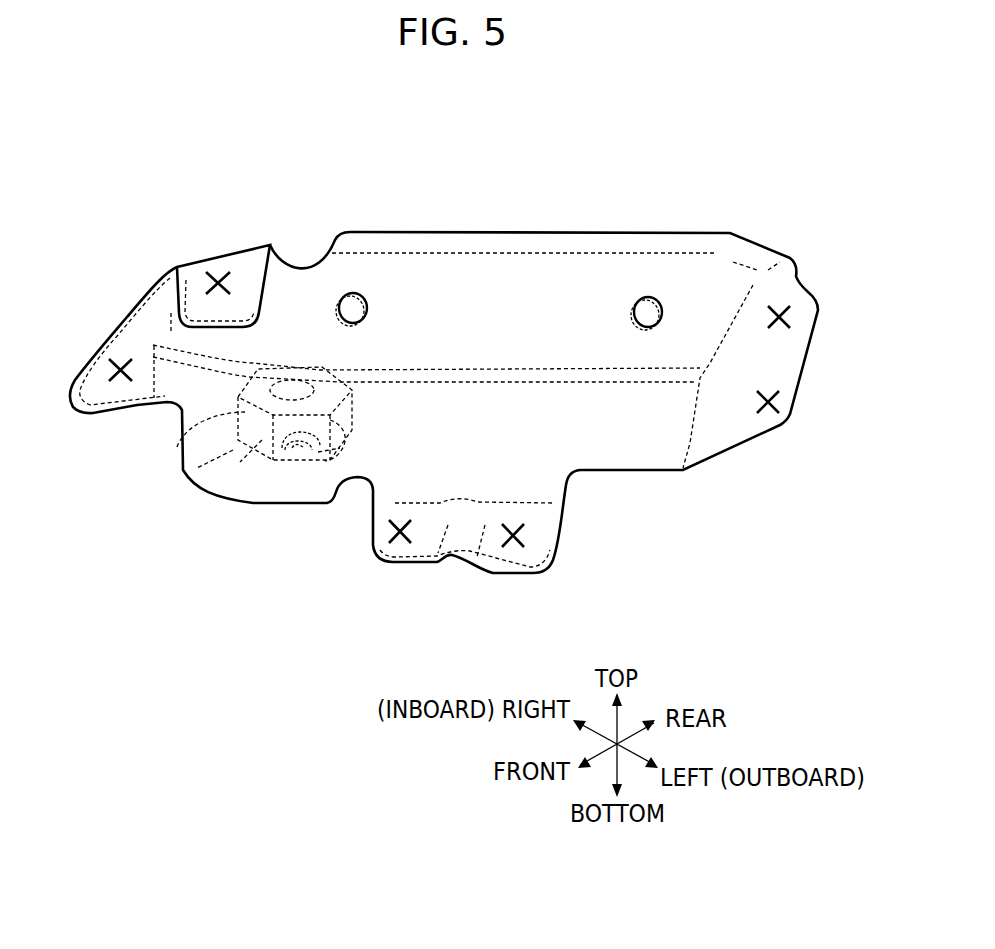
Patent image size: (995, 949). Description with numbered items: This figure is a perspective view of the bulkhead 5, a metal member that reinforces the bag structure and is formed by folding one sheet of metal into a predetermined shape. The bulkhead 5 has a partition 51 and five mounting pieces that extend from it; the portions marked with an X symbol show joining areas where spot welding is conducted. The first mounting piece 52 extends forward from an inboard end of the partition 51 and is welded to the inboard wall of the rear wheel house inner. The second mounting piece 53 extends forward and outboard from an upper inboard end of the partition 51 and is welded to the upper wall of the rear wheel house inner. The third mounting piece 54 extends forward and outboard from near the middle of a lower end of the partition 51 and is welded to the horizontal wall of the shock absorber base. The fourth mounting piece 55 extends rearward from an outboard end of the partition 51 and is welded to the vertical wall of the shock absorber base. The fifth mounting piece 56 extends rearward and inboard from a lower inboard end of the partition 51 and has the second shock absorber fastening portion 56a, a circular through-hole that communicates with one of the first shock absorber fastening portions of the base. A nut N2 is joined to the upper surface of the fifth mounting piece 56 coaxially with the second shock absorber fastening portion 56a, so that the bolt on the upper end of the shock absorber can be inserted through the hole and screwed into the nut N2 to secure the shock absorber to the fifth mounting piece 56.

The bulkhead 5 is at (664, 216).
The partition 51 is at (513, 292).
The first mounting piece 52 is at (131, 340).
The second mounting piece 53 is at (245, 266).
The third mounting piece 54 is at (490, 553).
The fourth mounting piece 55 is at (737, 432).
The fifth mounting piece 56 is at (242, 472).
The second shock absorber fastening portion 56a is at (324, 444).
The nut N2 is at (195, 446).